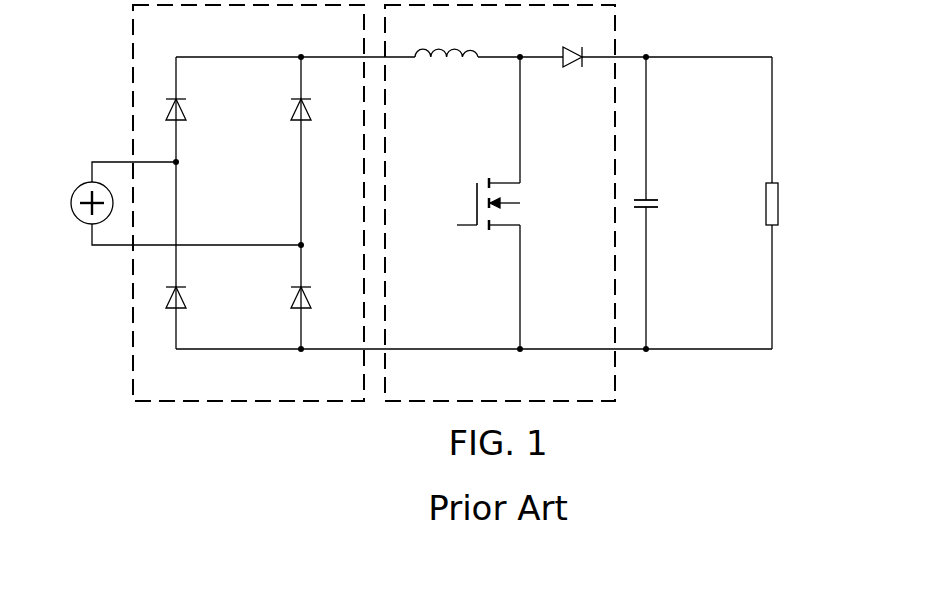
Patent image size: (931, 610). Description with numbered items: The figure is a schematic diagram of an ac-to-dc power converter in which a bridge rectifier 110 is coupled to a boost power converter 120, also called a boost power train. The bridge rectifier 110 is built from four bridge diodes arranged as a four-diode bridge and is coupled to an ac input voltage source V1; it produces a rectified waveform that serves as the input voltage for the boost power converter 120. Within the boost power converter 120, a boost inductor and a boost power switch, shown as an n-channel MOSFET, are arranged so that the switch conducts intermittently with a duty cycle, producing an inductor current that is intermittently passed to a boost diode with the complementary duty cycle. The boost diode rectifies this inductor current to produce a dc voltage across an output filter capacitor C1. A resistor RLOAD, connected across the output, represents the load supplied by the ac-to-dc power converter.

The bridge rectifier 110 is at (257, 387).
The boost power converter 120 is at (480, 388).
The ac input voltage source V1 is at (171, 203).
The output filter capacitor C1 is at (660, 203).
The load resistor RLOAD is at (801, 203).